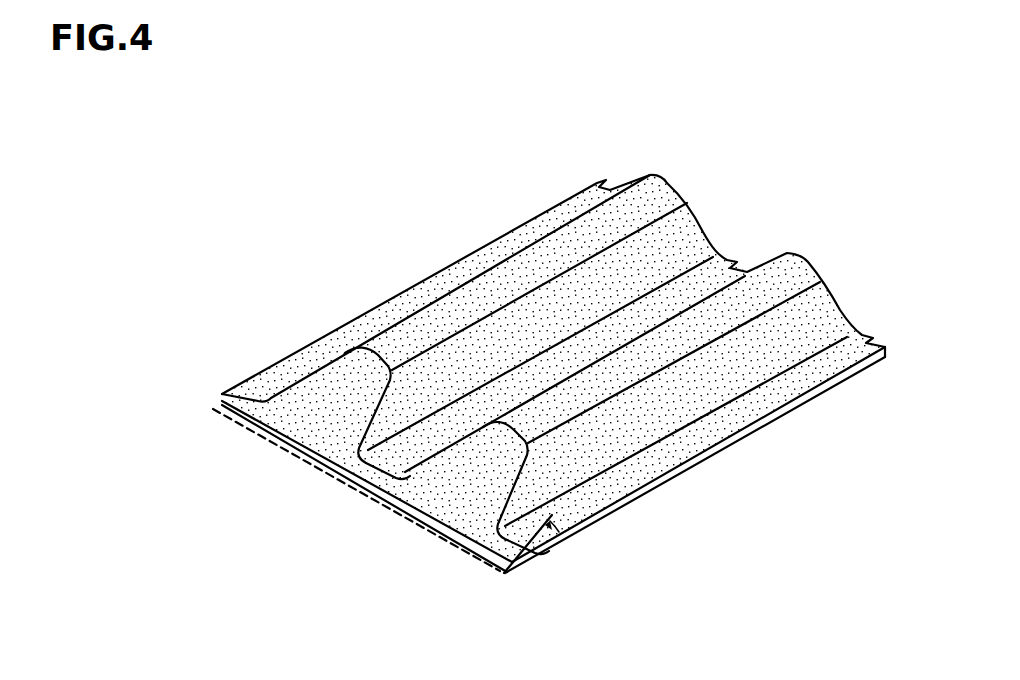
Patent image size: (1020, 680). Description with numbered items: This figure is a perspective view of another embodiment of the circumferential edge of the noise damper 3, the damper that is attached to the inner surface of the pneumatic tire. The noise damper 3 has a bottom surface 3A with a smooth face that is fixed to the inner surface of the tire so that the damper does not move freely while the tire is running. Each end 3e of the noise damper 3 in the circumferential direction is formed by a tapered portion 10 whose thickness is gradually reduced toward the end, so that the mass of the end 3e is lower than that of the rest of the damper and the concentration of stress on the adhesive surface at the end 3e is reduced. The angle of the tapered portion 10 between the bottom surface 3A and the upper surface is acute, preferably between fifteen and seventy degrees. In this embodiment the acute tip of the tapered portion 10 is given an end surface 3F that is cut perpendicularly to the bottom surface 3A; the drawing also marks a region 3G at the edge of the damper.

The noise damper 3 is at (508, 206).
The bottom surface 3A is at (433, 320).
The end 3e is at (333, 382).
The end surface 3F is at (289, 448).
The groove 3G is at (612, 331).
The tapered portion 10 is at (456, 494).